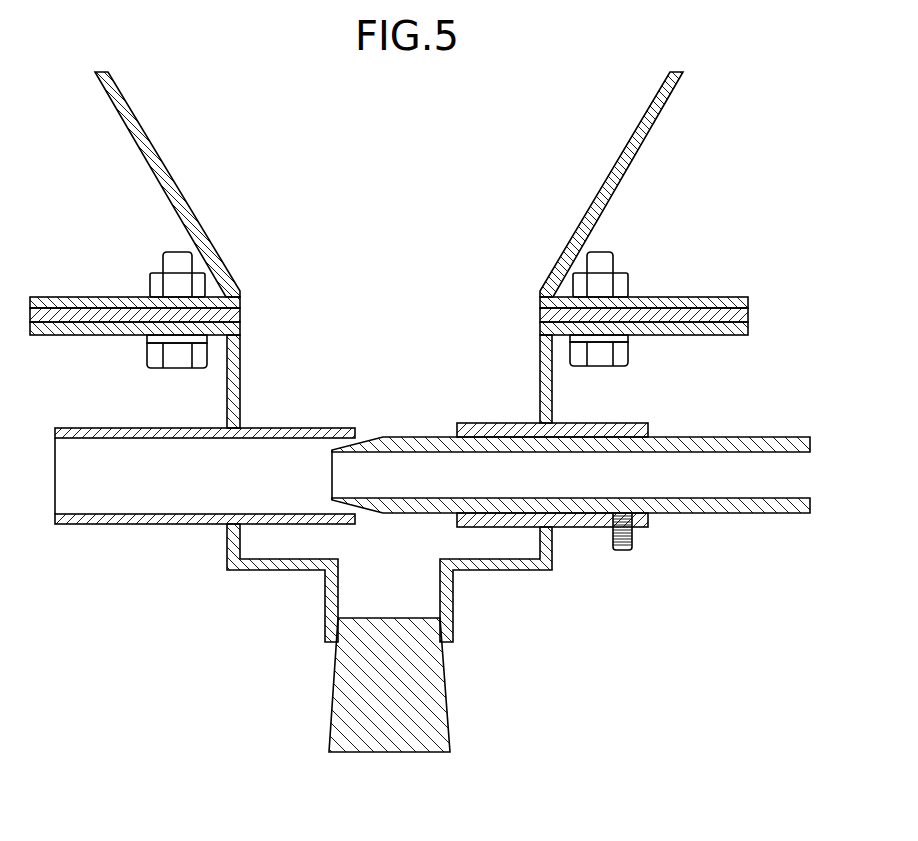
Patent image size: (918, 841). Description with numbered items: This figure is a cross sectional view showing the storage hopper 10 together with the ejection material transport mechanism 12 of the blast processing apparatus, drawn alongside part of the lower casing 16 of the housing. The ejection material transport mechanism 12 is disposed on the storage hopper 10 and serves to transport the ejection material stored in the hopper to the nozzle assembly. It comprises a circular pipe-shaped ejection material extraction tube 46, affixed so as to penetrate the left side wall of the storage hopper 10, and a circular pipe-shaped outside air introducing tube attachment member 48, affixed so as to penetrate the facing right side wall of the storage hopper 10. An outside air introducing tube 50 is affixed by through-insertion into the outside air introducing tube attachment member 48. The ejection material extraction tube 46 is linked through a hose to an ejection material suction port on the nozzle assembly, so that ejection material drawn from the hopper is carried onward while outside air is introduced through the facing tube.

The storage hopper 10 is at (553, 391).
The ejection material transport mechanism 12 is at (770, 421).
The lower casing 16 is at (647, 131).
The ejection material extraction tube 46 is at (97, 428).
The outside air introducing tube attachment member 48 is at (643, 422).
The outside air introducing tube 50 is at (673, 437).